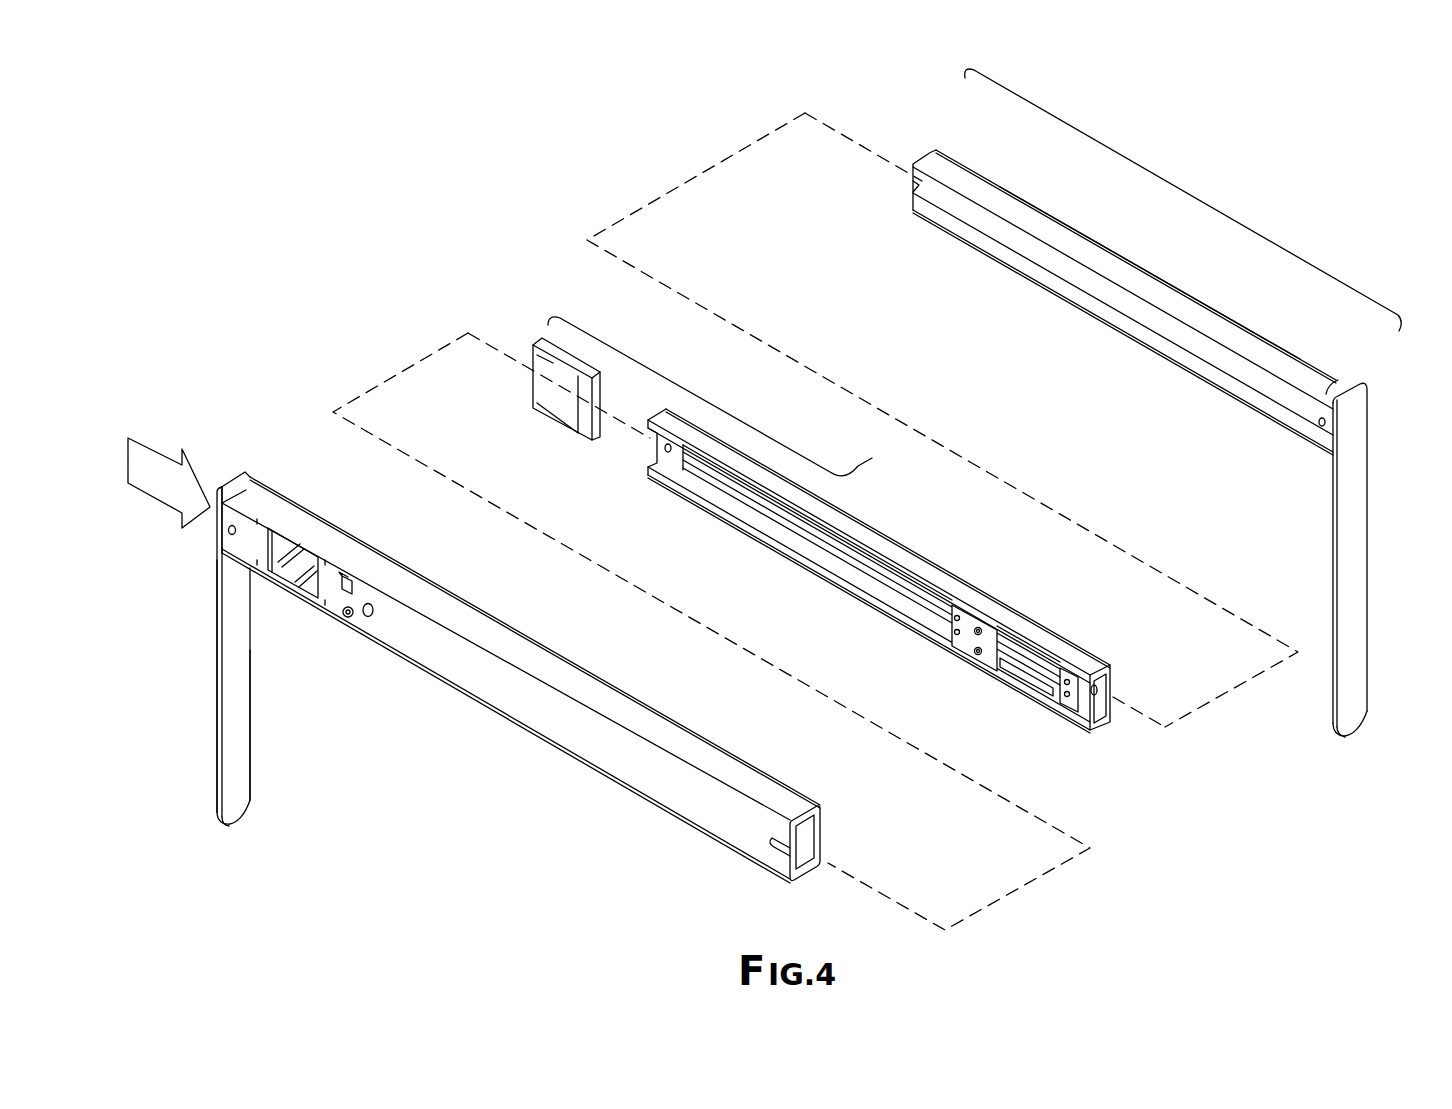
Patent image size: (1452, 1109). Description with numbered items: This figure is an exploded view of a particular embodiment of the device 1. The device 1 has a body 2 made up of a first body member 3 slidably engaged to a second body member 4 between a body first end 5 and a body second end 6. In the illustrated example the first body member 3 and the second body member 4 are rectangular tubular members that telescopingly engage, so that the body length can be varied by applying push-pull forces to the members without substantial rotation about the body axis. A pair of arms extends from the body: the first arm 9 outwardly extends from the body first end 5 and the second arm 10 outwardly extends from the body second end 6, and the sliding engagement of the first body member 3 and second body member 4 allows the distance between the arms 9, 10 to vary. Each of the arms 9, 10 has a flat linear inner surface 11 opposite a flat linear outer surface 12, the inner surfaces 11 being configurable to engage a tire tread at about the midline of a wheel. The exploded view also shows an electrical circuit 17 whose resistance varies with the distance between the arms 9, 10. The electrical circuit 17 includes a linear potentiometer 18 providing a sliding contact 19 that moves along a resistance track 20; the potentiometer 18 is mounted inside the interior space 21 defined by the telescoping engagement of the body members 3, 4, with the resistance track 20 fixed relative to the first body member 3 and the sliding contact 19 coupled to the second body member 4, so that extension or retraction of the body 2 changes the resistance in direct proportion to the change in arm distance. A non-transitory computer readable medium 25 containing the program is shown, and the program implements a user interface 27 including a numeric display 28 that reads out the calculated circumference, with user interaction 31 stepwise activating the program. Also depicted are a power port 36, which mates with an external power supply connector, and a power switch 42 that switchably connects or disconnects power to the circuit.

The device 1 is at (1392, 137).
The body 2 is at (1190, 195).
The first body member 3 is at (565, 644).
The second body member 4 is at (1198, 313).
The body first end 5 is at (256, 487).
The body second end 6 is at (1323, 380).
The first arm 9 is at (212, 573).
The second arm 10 is at (1350, 467).
The inner surface 11 is at (238, 735).
The outer surface 12 is at (217, 727).
The electrical circuit 17 is at (829, 542).
The potentiometer 18 is at (877, 627).
The sliding contact 19 is at (970, 645).
The resistance track 20 is at (1028, 668).
The interior space 21 is at (807, 833).
The non-transitory computer readable medium 25 is at (566, 398).
The user interface 27 is at (304, 553).
The numeric display 28 is at (277, 531).
The user interaction 31 is at (170, 483).
The power port 36 is at (347, 618).
The power switch 42 is at (346, 577).